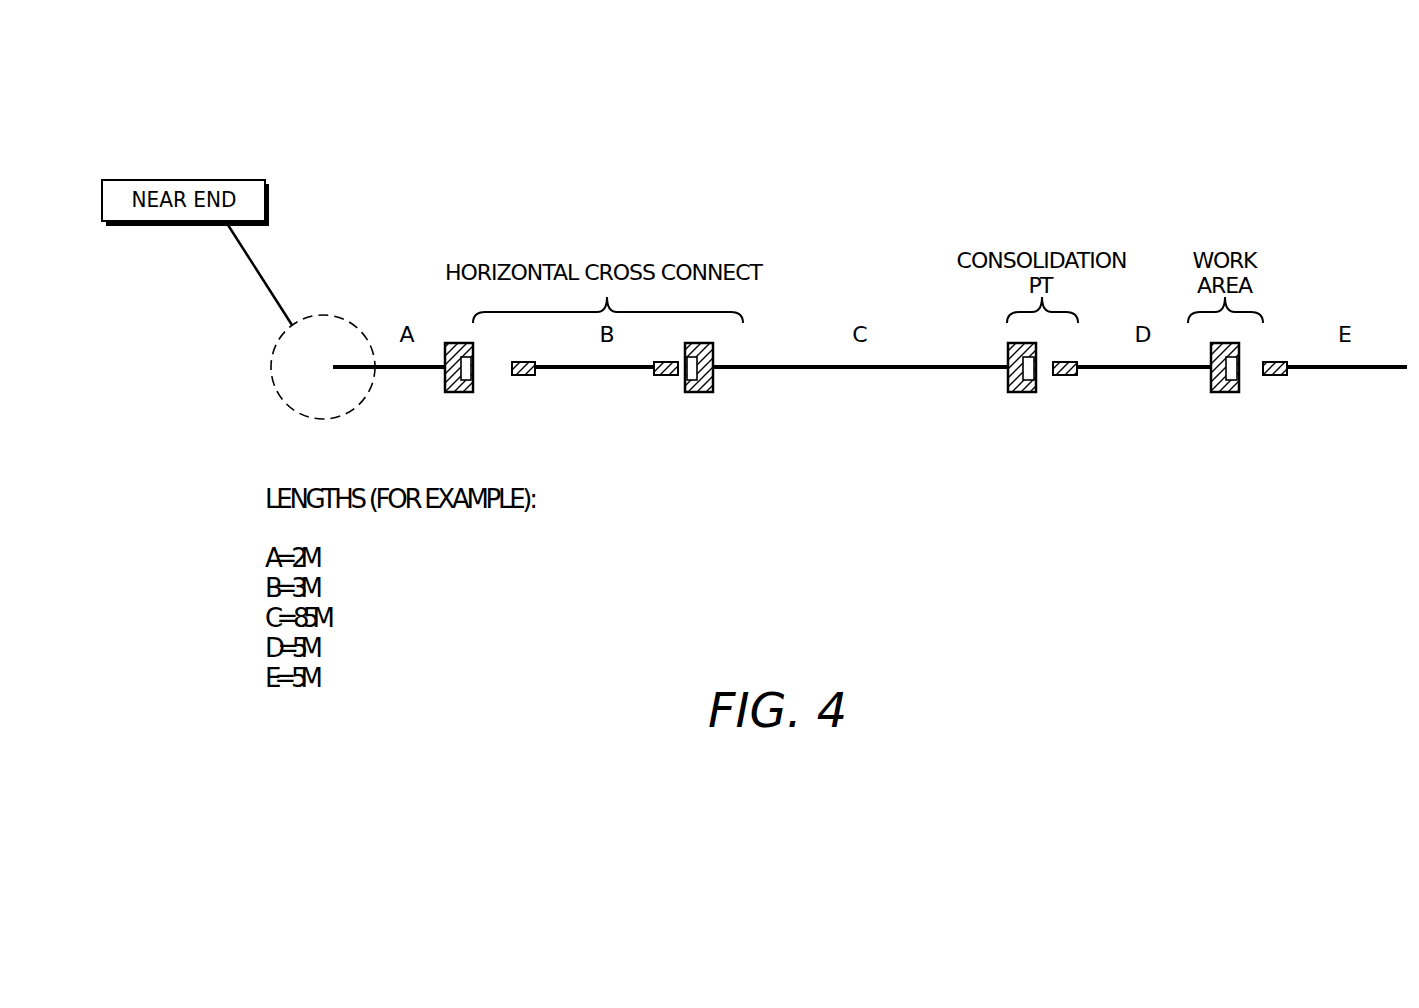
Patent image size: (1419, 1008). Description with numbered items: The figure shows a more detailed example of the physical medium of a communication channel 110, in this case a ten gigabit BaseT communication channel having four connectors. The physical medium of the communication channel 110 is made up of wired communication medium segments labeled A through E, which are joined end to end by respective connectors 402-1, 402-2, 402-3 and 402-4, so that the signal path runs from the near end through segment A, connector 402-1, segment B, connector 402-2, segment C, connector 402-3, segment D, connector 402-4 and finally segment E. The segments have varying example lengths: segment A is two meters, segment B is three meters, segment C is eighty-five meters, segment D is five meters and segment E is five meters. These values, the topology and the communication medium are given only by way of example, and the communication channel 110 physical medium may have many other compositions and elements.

The communication channel 110 is at (1402, 96).
The connector 402-1 is at (460, 392).
The connector 402-2 is at (702, 392).
The connector 402-3 is at (1022, 392).
The connector 402-4 is at (1227, 392).